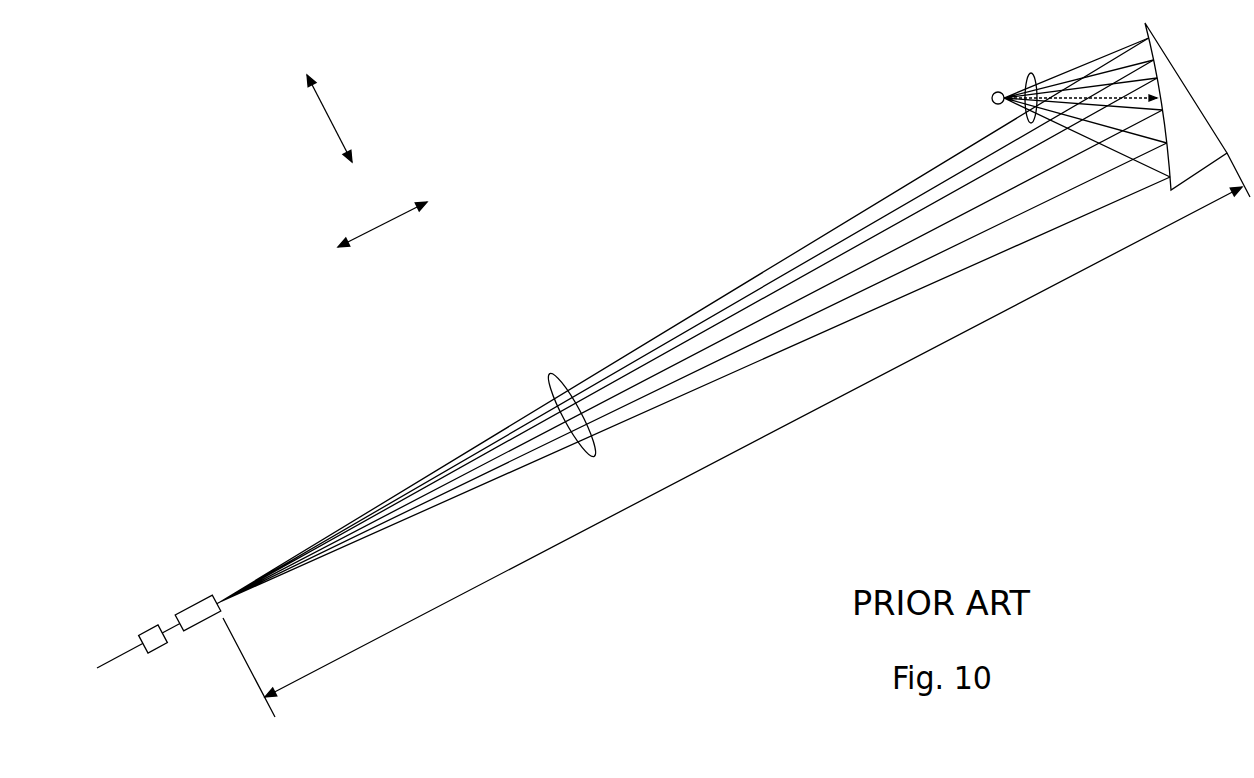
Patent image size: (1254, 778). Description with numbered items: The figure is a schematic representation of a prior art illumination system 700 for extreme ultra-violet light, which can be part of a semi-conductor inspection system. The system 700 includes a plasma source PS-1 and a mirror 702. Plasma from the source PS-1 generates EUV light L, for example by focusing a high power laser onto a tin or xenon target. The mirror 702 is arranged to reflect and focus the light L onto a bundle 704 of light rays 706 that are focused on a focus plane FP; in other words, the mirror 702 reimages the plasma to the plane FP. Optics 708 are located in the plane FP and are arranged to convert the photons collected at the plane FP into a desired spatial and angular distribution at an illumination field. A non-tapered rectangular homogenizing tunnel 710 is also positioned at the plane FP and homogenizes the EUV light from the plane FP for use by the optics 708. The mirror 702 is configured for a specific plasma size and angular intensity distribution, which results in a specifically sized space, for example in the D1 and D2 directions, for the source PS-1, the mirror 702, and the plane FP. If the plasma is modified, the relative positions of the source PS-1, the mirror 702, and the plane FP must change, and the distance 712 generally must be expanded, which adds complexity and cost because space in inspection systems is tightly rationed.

The prior art illumination system 700 is at (643, 200).
The mirror 702 is at (1201, 107).
The bundle of light rays 704 is at (552, 373).
The light rays 706 is at (643, 398).
The optics 708 is at (148, 630).
The non-tapered rectangular homogenizing tunnel 710 is at (197, 603).
The distance 712 is at (870, 385).
The focus plane FP is at (213, 588).
The plasma source PS-1 is at (991, 97).
The EUV light L is at (1028, 75).
The first direction D1 is at (365, 233).
The second direction D2 is at (328, 108).